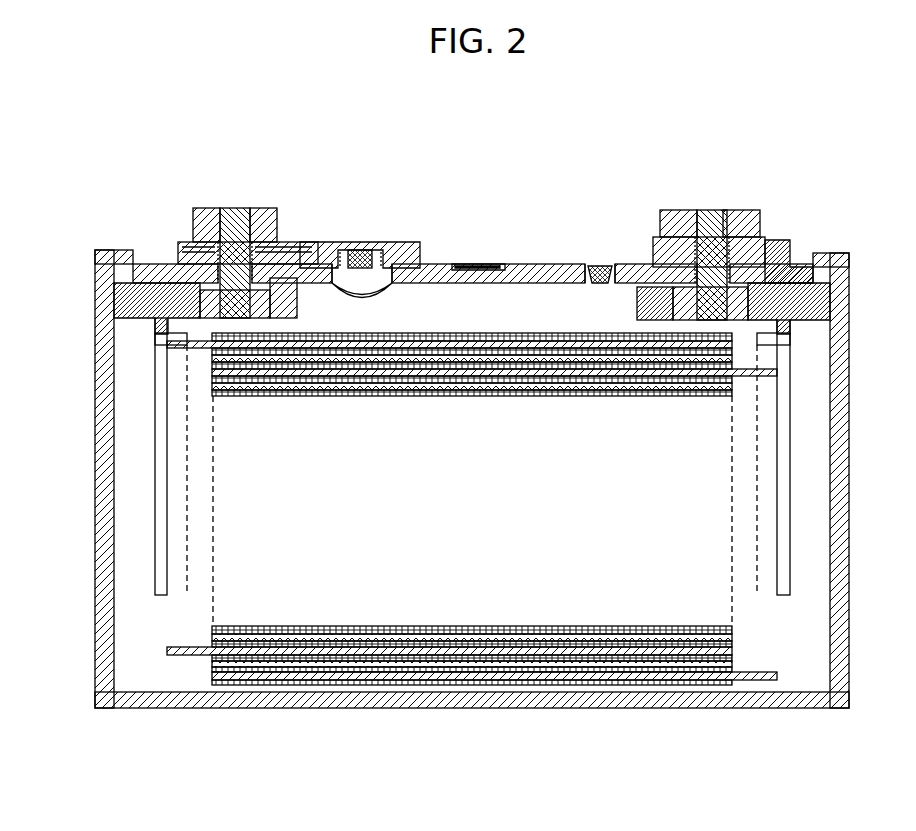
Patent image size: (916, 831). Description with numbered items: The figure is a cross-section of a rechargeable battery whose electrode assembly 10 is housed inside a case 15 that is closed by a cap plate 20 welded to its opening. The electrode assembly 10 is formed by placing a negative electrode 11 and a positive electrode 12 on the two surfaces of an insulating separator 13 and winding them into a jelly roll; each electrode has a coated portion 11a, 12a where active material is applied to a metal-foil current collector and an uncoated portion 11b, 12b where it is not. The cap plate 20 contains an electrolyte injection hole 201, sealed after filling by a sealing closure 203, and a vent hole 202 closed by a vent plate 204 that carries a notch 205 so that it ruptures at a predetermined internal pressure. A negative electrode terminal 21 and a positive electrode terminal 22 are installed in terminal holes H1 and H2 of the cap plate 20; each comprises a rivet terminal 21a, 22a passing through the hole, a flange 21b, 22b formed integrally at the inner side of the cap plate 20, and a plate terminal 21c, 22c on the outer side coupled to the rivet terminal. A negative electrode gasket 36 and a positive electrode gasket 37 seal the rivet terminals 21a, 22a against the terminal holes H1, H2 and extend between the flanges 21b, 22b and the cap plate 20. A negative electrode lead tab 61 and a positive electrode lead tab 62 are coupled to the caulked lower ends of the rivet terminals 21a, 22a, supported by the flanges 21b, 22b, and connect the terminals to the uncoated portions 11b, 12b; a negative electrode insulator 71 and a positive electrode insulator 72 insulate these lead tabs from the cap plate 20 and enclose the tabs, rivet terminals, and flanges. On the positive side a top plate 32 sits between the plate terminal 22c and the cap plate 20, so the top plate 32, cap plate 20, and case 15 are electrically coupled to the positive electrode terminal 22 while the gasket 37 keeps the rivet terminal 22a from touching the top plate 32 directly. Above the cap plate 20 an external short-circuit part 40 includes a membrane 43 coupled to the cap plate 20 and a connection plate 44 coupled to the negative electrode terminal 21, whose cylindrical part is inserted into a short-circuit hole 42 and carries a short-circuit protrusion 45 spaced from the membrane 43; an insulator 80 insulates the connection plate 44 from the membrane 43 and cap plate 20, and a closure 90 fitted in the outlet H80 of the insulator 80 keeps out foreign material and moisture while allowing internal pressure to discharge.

The electrode assembly 10 is at (582, 700).
The negative electrode 11 is at (180, 758).
The coated portion 11a is at (298, 682).
The uncoated portion 11b is at (190, 680).
The positive electrode 12 is at (655, 764).
The coated portion 12a is at (668, 682).
The uncoated portion 12b is at (760, 682).
The separator 13 is at (480, 686).
The case 15 is at (849, 422).
The cap plate 20 is at (548, 268).
The electrolyte injection hole 201 is at (596, 286).
The vent hole 202 is at (476, 270).
The sealing closure 203 is at (602, 266).
The vent plate 204 is at (495, 264).
The notch 205 is at (473, 266).
The negative electrode terminal 21 is at (236, 200).
The rivet terminal 21a is at (236, 330).
The flange 21b is at (200, 300).
The plate terminal 21c is at (262, 210).
The positive electrode terminal 22 is at (712, 202).
The rivet terminal 22a is at (760, 330).
The flange 22b is at (690, 322).
The plate terminal 22c is at (748, 212).
The top plate 32 is at (780, 262).
The negative electrode gasket 36 is at (140, 262).
The positive electrode gasket 37 is at (662, 287).
The external short-circuit part 40 is at (345, 244).
The short-circuit hole 42 is at (375, 296).
The membrane 43 is at (340, 286).
The connection plate 44 is at (182, 247).
The short-circuit protrusion 45 is at (320, 318).
The negative electrode lead tab 61 is at (150, 436).
The positive electrode lead tab 62 is at (800, 560).
The negative electrode insulator 71 is at (150, 296).
The positive electrode insulator 72 is at (800, 300).
The insulator 80 is at (415, 242).
The closure 90 is at (360, 250).
The terminal hole H1 is at (220, 245).
The terminal hole H2 is at (730, 240).
The outlet H80 is at (362, 272).